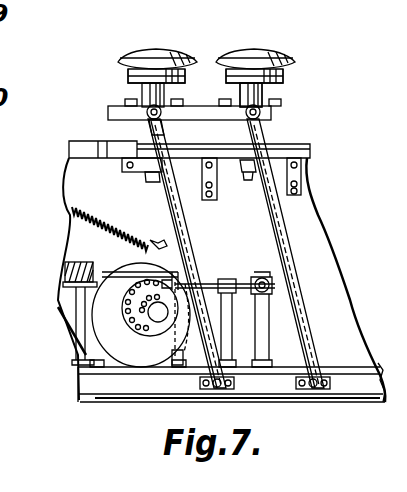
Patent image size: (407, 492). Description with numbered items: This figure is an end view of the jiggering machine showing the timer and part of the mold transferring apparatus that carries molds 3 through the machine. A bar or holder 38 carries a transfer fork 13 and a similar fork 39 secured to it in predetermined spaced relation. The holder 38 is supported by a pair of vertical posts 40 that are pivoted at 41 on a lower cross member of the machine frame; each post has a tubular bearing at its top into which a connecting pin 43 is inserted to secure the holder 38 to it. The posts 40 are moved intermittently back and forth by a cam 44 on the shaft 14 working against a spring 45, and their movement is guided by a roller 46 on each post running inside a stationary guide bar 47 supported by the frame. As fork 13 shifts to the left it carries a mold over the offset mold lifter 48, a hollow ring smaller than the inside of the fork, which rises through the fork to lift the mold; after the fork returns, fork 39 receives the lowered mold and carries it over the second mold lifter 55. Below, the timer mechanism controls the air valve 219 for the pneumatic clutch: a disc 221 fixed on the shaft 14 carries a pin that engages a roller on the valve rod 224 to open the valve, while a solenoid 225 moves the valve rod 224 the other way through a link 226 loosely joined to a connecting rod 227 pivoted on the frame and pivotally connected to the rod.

The mold 3 is at (240, 49).
The mold lifter 55 is at (128, 77).
The fork 39 is at (130, 101).
The bar or holder 38 is at (109, 115).
The connecting pin 43 is at (150, 120).
The mold lifter 48 is at (280, 78).
The transfer fork 13 is at (264, 104).
The stationary guide bar 47 is at (310, 163).
The roller 46 is at (151, 183).
The vertical post 40 is at (188, 220).
The spring 45 is at (72, 208).
The link 226 is at (150, 264).
The solenoid 225 is at (64, 273).
The connecting rod 227 is at (180, 271).
The valve rod 224 is at (218, 281).
The valve 219 is at (270, 280).
The disc 221 is at (130, 318).
The cam 44 is at (115, 347).
The shaft 14 is at (157, 316).
The pivot 41 is at (212, 390).